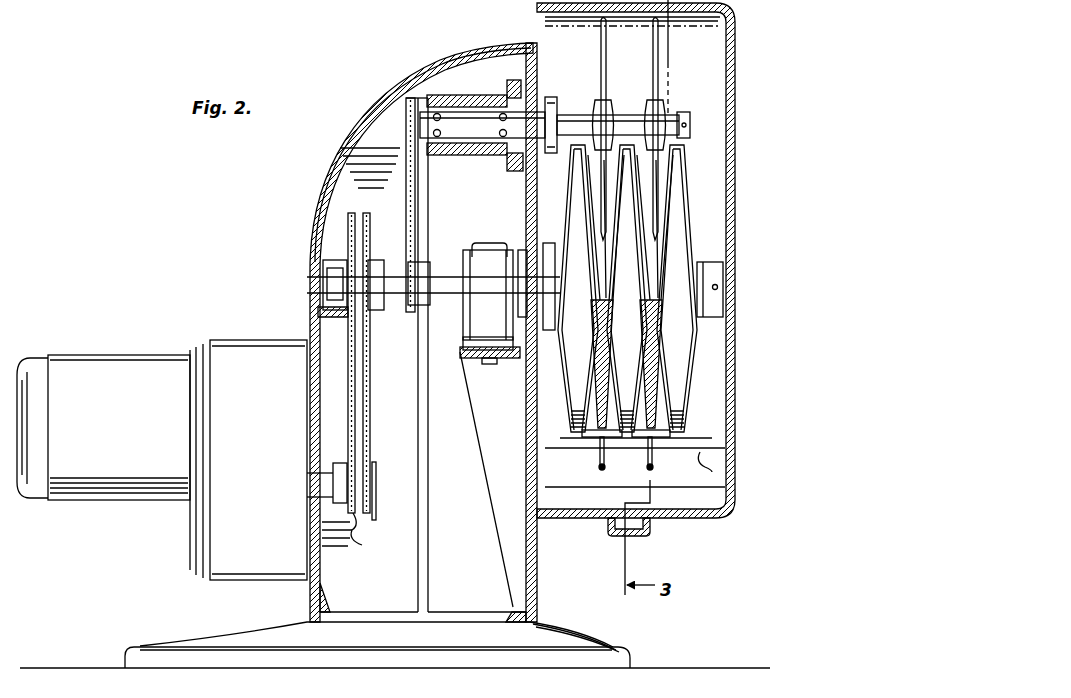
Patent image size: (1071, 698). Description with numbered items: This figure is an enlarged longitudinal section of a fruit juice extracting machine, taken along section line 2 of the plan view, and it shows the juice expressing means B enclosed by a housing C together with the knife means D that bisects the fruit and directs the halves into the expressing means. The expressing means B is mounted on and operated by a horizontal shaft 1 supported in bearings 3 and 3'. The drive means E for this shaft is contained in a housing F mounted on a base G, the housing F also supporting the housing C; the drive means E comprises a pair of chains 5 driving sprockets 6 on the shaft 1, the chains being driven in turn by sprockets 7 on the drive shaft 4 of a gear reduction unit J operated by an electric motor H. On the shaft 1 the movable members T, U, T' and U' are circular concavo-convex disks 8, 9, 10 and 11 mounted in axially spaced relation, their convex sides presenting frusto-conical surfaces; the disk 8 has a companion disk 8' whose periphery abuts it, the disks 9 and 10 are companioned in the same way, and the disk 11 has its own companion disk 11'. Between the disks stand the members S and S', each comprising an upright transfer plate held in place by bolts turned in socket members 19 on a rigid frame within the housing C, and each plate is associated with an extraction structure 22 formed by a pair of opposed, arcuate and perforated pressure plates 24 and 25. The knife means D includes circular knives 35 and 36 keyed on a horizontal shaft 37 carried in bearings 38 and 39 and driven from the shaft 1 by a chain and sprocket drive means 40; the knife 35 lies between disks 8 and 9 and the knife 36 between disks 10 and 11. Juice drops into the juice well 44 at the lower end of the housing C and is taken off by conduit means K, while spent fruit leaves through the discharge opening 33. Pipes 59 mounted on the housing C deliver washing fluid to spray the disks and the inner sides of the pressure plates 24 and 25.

The horizontal shaft 1 is at (448, 296).
The section line 2 is at (412, 86).
The bearing 3 is at (493, 289).
The bearing 3' is at (306, 285).
The drive shaft 4 is at (310, 482).
The chains 5 is at (366, 396).
The sprockets 6 is at (355, 214).
The sprockets 7 is at (363, 535).
The concavo-convex disk 8 is at (648, 368).
The companion disk 8' is at (674, 368).
The concavo-convex disk 9 is at (642, 226).
The concavo-convex disk 10 is at (608, 360).
The concavo-convex disk 11 is at (540, 368).
The companion disk 11' is at (526, 275).
The socket members 19 is at (568, 426).
The extraction structure 22 is at (712, 438).
The pressure plate 24 is at (660, 383).
The pressure plate 25 is at (645, 399).
The discharge opening 33 is at (712, 472).
The circular knife 35 is at (659, 47).
The circular knife 36 is at (600, 52).
The horizontal shaft 37 is at (576, 114).
The bearing 38 is at (457, 142).
The bearing 39 is at (510, 99).
The chain and sprocket drive means 40 is at (405, 198).
The juice well 44 is at (704, 497).
The pipes 59 is at (632, 472).
The juice expressing means B is at (698, 203).
The housing C is at (737, 76).
The knife means D is at (662, 91).
The drive means E is at (346, 243).
The housing F is at (332, 178).
The base G is at (252, 638).
The electric motor H is at (150, 352).
The gear reduction unit J is at (254, 340).
The conduit means K is at (652, 538).
The transfer member S is at (665, 457).
The transfer member S' is at (582, 456).
The movable member T is at (635, 282).
The movable member T' is at (553, 185).
The movable member U is at (653, 227).
The movable member U' is at (583, 227).